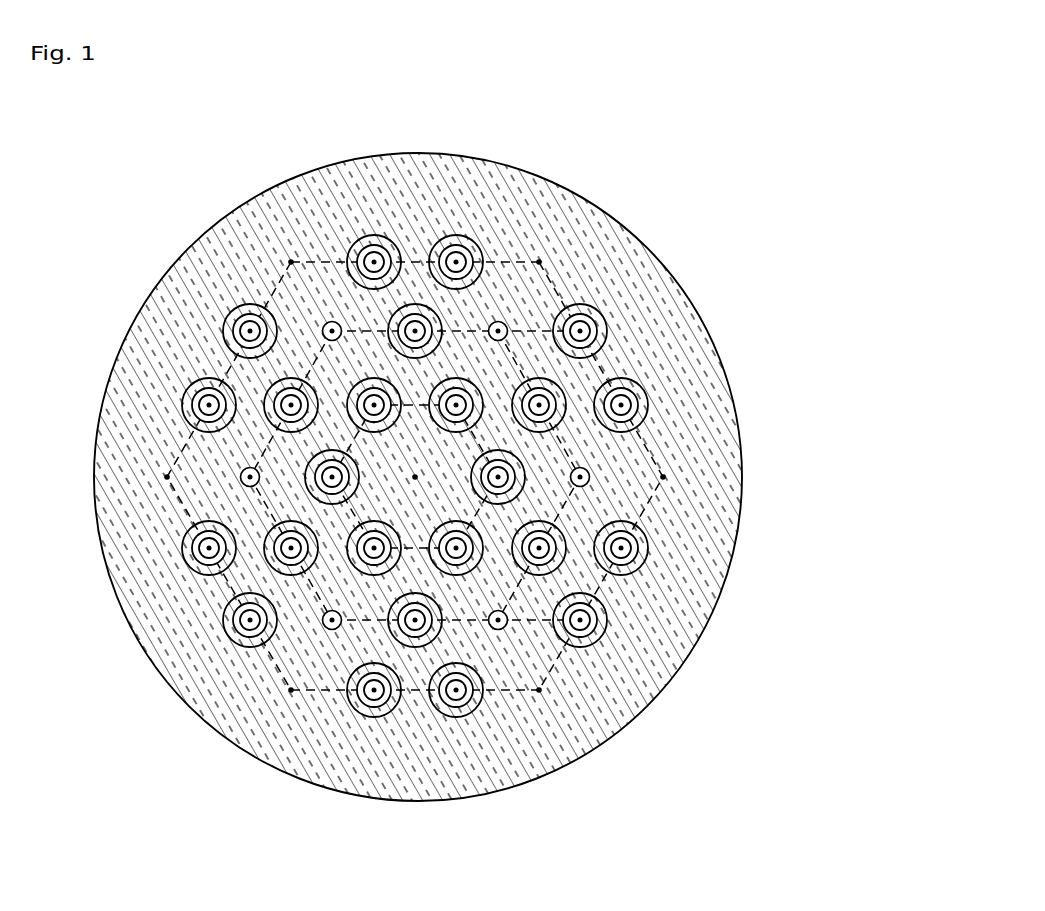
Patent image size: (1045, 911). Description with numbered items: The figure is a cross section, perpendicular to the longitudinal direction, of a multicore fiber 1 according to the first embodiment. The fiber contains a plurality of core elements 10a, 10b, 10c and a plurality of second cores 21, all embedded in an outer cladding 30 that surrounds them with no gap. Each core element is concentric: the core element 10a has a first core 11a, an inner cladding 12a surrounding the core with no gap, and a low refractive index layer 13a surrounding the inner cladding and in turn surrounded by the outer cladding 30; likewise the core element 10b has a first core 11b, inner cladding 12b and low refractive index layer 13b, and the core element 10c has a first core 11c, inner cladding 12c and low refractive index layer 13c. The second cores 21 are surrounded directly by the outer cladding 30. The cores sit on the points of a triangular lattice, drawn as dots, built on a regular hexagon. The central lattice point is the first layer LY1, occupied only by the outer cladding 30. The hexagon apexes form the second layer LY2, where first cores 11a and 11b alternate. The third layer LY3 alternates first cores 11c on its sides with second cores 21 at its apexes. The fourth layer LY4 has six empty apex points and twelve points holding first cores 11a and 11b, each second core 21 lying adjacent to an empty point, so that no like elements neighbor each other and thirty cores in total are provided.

The multicore fiber 1 is at (677, 128).
The core element 10a is at (423, 472).
The core element 10b is at (414, 463).
The core element 10c is at (421, 495).
The first core 11a is at (460, 253).
The first core 11b is at (373, 253).
The first core 11c is at (421, 628).
The inner cladding 12a is at (470, 279).
The inner cladding 12b is at (362, 279).
The inner cladding 12c is at (417, 636).
The low refractive index layer 13a is at (484, 266).
The low refractive index layer 13b is at (396, 270).
The low refractive index layer 13c is at (404, 646).
The second core 21 is at (289, 259).
The outer cladding 30 is at (705, 418).
The first layer LY1 is at (345, 440).
The second layer LY2 is at (495, 437).
The third layer LY3 is at (548, 256).
The fourth layer LY4 is at (340, 246).